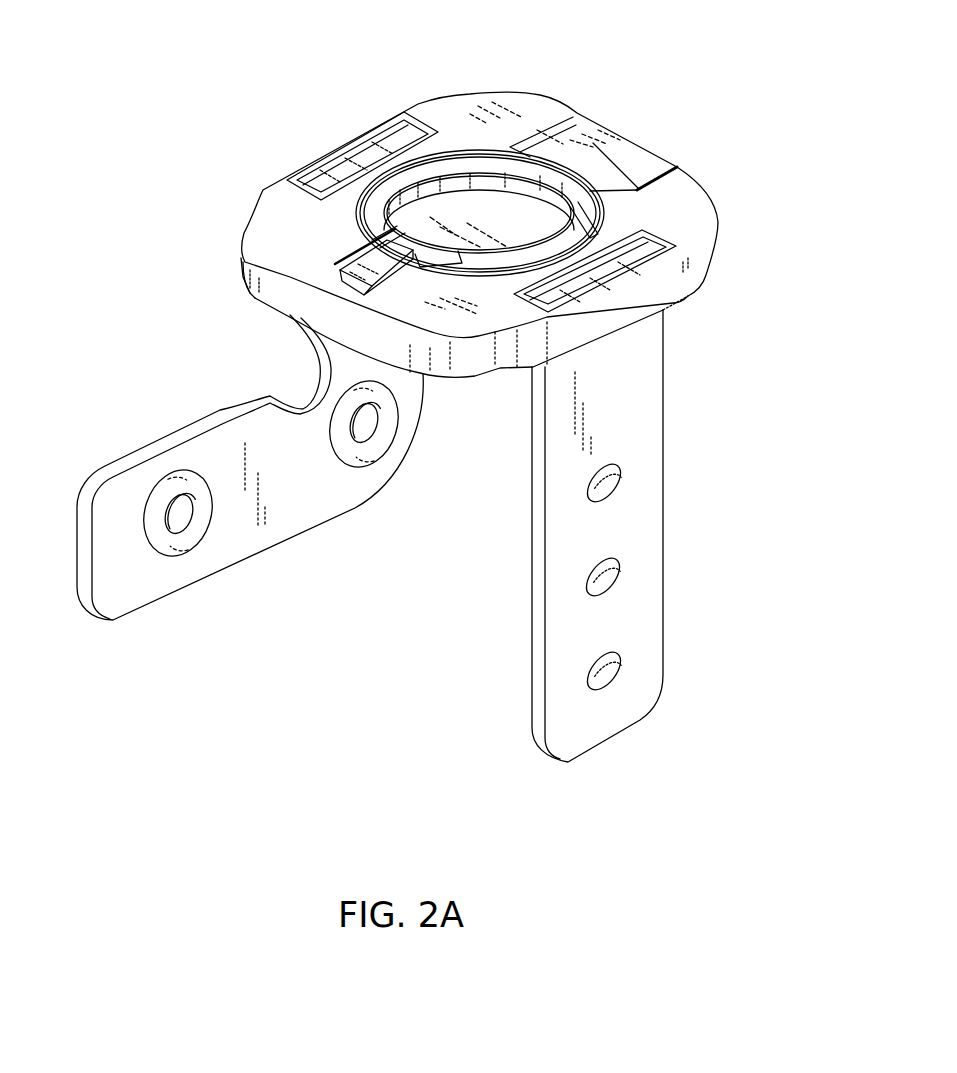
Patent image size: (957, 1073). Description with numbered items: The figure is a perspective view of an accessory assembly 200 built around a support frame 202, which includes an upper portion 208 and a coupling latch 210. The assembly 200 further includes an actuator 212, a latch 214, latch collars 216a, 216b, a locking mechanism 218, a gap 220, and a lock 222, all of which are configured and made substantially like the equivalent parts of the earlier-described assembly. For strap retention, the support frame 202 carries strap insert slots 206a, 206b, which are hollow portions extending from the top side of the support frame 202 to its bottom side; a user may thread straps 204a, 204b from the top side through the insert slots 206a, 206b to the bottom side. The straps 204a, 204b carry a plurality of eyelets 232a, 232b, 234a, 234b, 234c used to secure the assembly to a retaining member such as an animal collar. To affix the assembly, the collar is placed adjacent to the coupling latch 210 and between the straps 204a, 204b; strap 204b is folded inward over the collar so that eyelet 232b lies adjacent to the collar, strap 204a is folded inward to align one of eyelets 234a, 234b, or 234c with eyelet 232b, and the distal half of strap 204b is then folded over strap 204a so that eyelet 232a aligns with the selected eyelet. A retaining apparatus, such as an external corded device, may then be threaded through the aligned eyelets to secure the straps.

The accessory assembly 200 is at (693, 76).
The support frame 202 is at (490, 100).
The strap 204a is at (655, 342).
The strap 204b is at (298, 502).
The strap insert slot 206a is at (668, 248).
The strap insert slot 206b is at (418, 124).
The upper portion 208 is at (250, 284).
The coupling latch 210 is at (410, 227).
The actuator 212 is at (577, 118).
The latch 214 is at (583, 213).
The latch collar 216a is at (597, 187).
The latch collar 216b is at (465, 270).
The locking mechanism 218 is at (375, 270).
The gap 220 is at (333, 277).
The lock 222 is at (403, 250).
The eyelet 232a is at (183, 517).
The eyelet 232b is at (363, 427).
The eyelet 234a is at (607, 483).
The eyelet 234b is at (607, 573).
The eyelet 234c is at (607, 673).